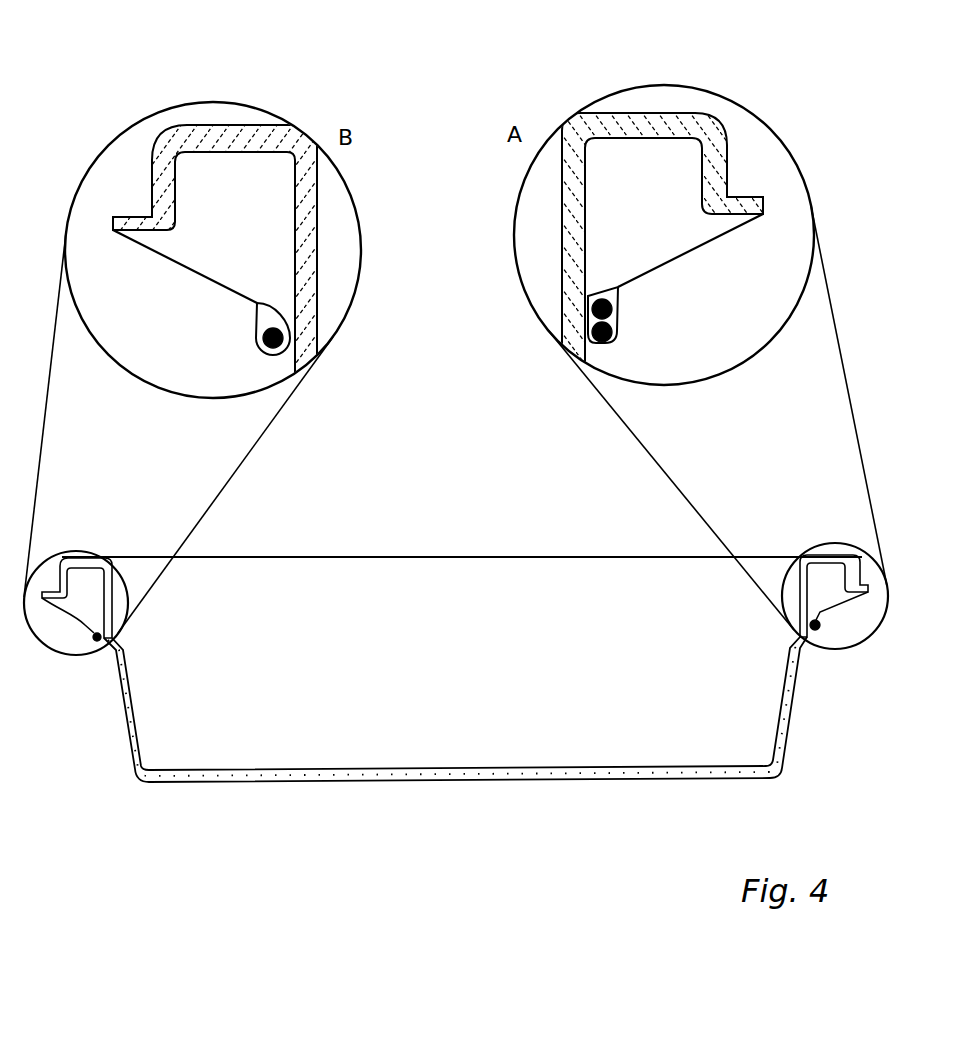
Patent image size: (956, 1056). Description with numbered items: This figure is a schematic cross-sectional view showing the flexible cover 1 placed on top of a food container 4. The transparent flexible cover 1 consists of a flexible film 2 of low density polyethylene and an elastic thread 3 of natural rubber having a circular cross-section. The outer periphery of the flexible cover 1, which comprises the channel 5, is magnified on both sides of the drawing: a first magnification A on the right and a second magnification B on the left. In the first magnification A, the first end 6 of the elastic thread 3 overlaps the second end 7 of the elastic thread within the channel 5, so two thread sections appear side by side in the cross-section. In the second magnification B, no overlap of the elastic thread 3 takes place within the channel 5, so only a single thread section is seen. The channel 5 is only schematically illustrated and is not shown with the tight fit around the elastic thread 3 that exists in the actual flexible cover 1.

The flexible cover 1 is at (373, 556).
The flexible film 2 is at (148, 160).
The elastic thread 3 is at (262, 340).
The food container 4 is at (260, 780).
The channel 5 is at (257, 319).
The first end of the elastic thread 6 is at (611, 310).
The second end of the elastic thread 7 is at (617, 340).